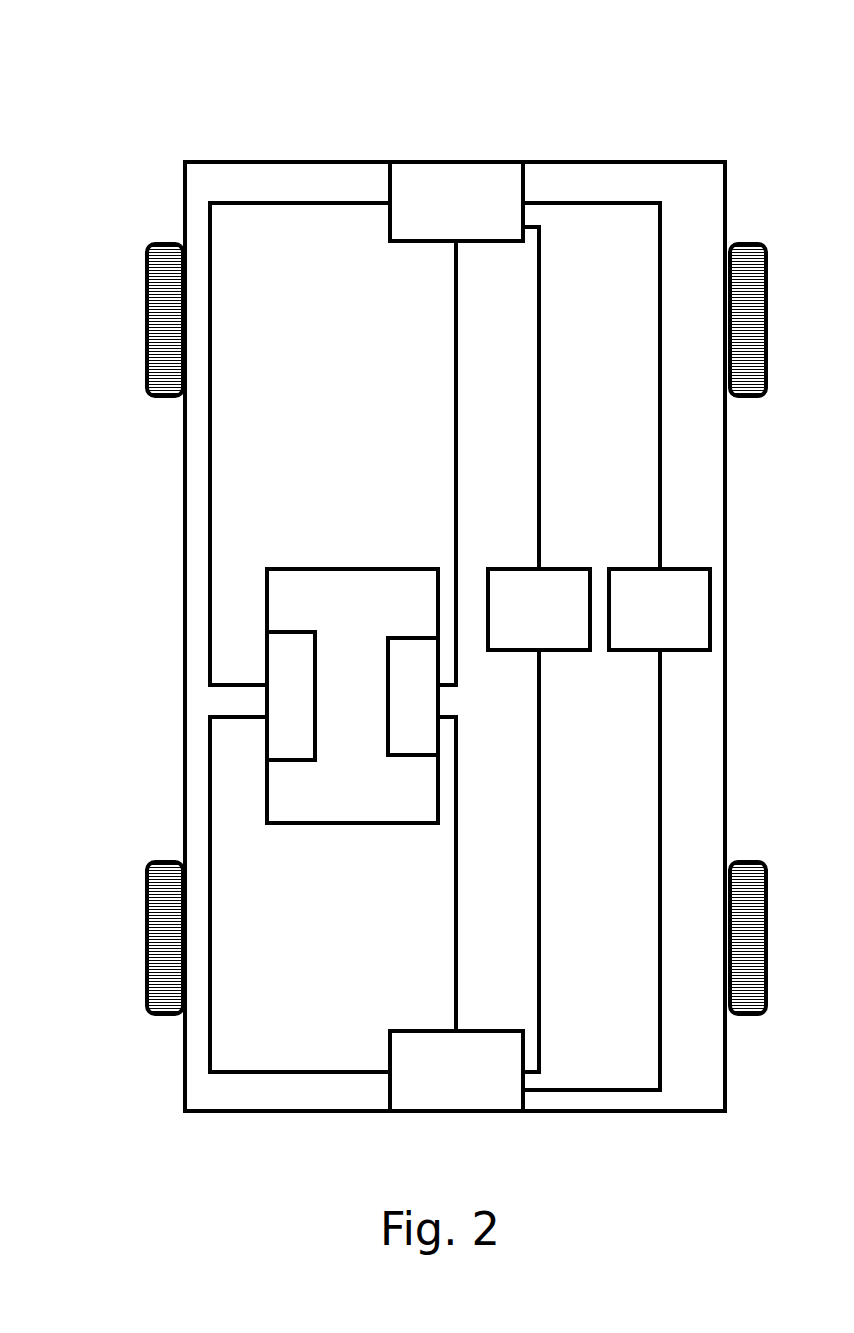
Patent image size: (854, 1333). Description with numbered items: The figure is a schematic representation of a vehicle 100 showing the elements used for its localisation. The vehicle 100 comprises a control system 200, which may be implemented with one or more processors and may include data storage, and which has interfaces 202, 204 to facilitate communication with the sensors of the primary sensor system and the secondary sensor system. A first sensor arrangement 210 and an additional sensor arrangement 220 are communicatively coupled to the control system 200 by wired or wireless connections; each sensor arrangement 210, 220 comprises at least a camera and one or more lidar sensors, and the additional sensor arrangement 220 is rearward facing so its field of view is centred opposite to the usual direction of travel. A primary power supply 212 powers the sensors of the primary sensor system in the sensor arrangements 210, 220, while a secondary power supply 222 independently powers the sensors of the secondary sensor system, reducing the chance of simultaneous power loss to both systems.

The vehicle 100 is at (116, 134).
The control system 200 is at (352, 696).
The interface 202 is at (291, 696).
The interface 204 is at (413, 696).
The first sensor arrangement 210 is at (456, 201).
The primary power supply 212 is at (659, 609).
The additional sensor arrangement 220 is at (456, 1071).
The secondary power supply 222 is at (539, 609).